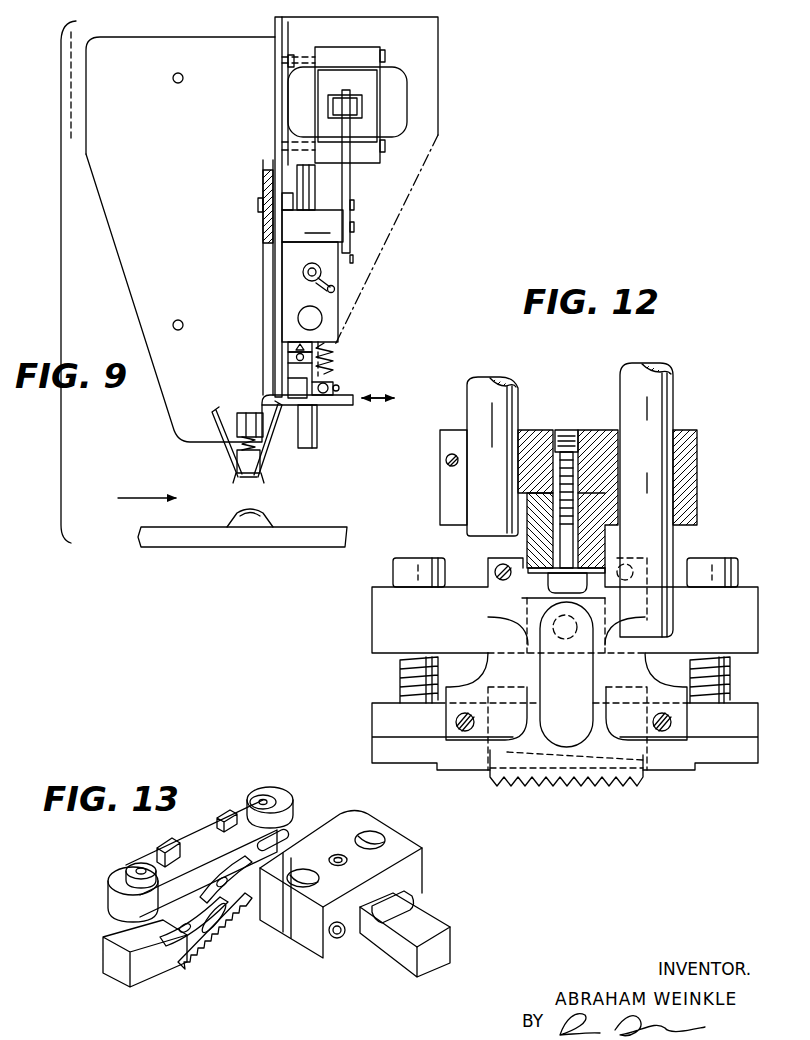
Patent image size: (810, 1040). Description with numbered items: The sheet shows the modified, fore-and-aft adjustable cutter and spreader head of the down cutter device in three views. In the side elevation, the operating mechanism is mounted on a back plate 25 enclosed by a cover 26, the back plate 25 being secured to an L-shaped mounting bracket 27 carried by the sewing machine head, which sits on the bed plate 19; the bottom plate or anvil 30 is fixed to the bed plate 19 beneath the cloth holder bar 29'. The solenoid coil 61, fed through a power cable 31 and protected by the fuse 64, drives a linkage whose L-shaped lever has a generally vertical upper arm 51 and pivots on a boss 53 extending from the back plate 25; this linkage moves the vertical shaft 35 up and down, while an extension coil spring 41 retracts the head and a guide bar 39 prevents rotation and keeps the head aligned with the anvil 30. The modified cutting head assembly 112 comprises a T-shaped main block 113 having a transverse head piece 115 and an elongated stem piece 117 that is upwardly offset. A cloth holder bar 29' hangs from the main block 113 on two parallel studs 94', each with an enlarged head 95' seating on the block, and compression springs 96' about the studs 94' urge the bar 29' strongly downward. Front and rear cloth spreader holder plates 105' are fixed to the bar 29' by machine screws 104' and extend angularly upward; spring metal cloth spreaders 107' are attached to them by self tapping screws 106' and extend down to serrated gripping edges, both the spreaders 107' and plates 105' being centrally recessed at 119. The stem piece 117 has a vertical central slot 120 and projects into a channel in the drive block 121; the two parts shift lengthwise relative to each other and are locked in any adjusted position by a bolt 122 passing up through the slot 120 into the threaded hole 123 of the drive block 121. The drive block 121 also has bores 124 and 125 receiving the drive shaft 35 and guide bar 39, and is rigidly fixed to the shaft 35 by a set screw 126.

In FIG. 9, the sewing machine bed plate 19 is at (200, 541).
In FIG. 9, the back plate 25 is at (275, 28).
In FIG. 9, the cover 26 is at (440, 143).
In FIG. 9, the L-shaped mounting bracket 27 is at (127, 260).
In FIG. 9, the cloth holder bar 29' is at (250, 450).
In FIG. 12, the cloth holder bar 29' is at (546, 736).
In FIG. 13, the cloth holder bar 29' is at (128, 953).
In FIG. 9, the bottom plate or anvil 30 is at (270, 521).
In FIG. 9, the power cable 31 is at (310, 282).
In FIG. 9, the shaft 35 is at (297, 180).
In FIG. 12, the shaft 35 is at (480, 409).
In FIG. 9, the guide bar 39 is at (318, 428).
In FIG. 12, the guide bar 39 is at (670, 403).
In FIG. 9, the extension coil spring 41 is at (335, 357).
In FIG. 9, the upper arm 51 is at (352, 170).
In FIG. 9, the boss 53 is at (300, 237).
In FIG. 9, the solenoid coil 61 is at (398, 82).
In FIG. 9, the fuse 64 is at (320, 304).
In FIG. 12, the studs 94' is at (567, 680).
In FIG. 12, the enlarged head 95' is at (566, 556).
In FIG. 13, the enlarged head 95' is at (191, 825).
In FIG. 12, the compression springs 96' is at (567, 680).
In FIG. 12, the machine screws 104' is at (584, 754).
In FIG. 12, the cloth spreader holder plates 105' is at (520, 674).
In FIG. 13, the cloth spreader holder plates 105' is at (190, 954).
In FIG. 12, the self tapping screws 106' is at (482, 571).
In FIG. 12, the cloth spreaders 107' is at (576, 779).
In FIG. 13, the cloth spreaders 107' is at (220, 934).
In FIG. 9, the cutting head assembly 112 is at (246, 409).
In FIG. 12, the cutting head assembly 112 is at (372, 612).
In FIG. 13, the cutting head assembly 112 is at (108, 921).
In FIG. 13, the T-shaped main block 113 is at (391, 977).
In FIG. 12, the head piece 115 is at (400, 628).
In FIG. 13, the head piece 115 is at (110, 904).
In FIG. 12, the stem piece 117 is at (592, 476).
In FIG. 13, the stem piece 117 is at (432, 925).
In FIG. 12, the recess 119 is at (524, 550).
In FIG. 13, the recess 119 is at (236, 882).
In FIG. 13, the vertical central slot 120 is at (406, 912).
In FIG. 9, the drive block 121 is at (288, 387).
In FIG. 12, the drive block 121 is at (700, 472).
In FIG. 13, the drive block 121 is at (366, 818).
In FIG. 12, the bolt 122 is at (546, 458).
In FIG. 12, the threaded hole 123 is at (568, 430).
In FIG. 13, the threaded hole 123 is at (338, 857).
In FIG. 13, the bore 124 is at (302, 877).
In FIG. 13, the bore 125 is at (376, 845).
In FIG. 12, the set screw 126 is at (446, 462).
In FIG. 13, the set screw 126 is at (336, 941).